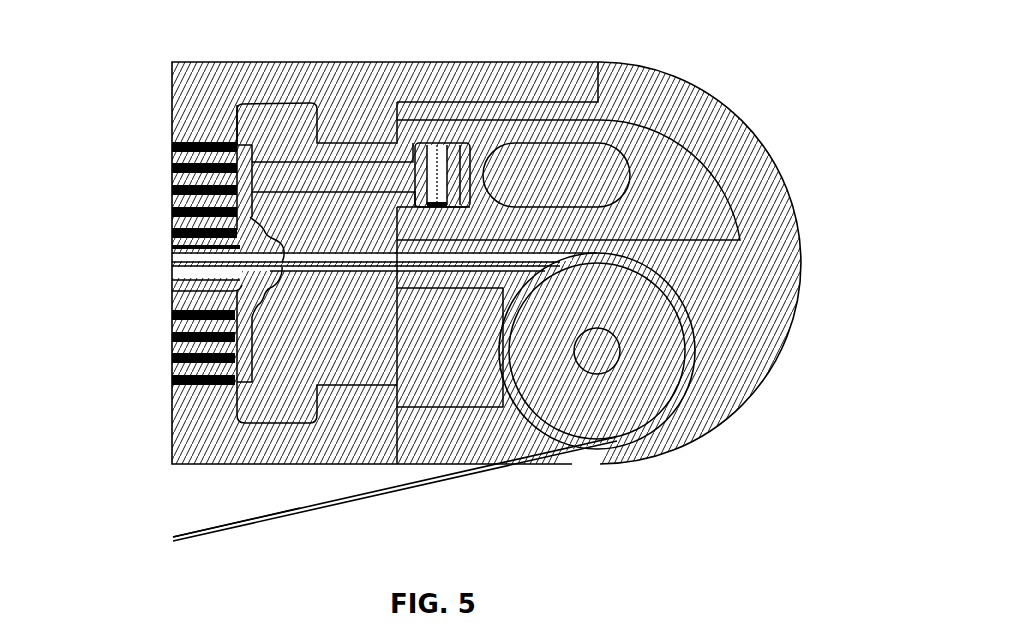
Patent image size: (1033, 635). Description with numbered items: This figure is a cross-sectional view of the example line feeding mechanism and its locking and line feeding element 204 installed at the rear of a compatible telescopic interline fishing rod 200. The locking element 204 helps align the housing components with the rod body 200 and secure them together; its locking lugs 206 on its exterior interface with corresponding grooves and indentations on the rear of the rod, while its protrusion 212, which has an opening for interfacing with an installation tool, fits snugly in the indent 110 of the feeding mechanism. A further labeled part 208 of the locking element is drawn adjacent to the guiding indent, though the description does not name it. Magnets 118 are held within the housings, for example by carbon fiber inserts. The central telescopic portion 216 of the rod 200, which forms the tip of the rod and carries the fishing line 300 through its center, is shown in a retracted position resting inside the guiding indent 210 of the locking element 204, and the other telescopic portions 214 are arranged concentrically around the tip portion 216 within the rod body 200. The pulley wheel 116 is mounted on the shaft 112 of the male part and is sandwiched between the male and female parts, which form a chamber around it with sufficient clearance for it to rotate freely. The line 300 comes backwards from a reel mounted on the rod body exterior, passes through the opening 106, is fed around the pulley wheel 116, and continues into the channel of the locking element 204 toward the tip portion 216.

The telescopic interline fishing rod 200 is at (190, 73).
The locking and line feeding element 204 is at (333, 143).
The locking lugs 206 is at (275, 112).
The lower block 208 is at (315, 268).
The guiding indent 210 is at (267, 268).
The protrusion 212 is at (418, 150).
The indent 110 is at (448, 150).
The magnets 118 is at (557, 157).
The other telescopic portions 214 is at (178, 200).
The central telescopic portion 216 is at (175, 247).
The pulley wheel 116 is at (617, 418).
The shaft 112 is at (612, 357).
The opening 106 is at (560, 462).
The fishing line 300 is at (193, 525).